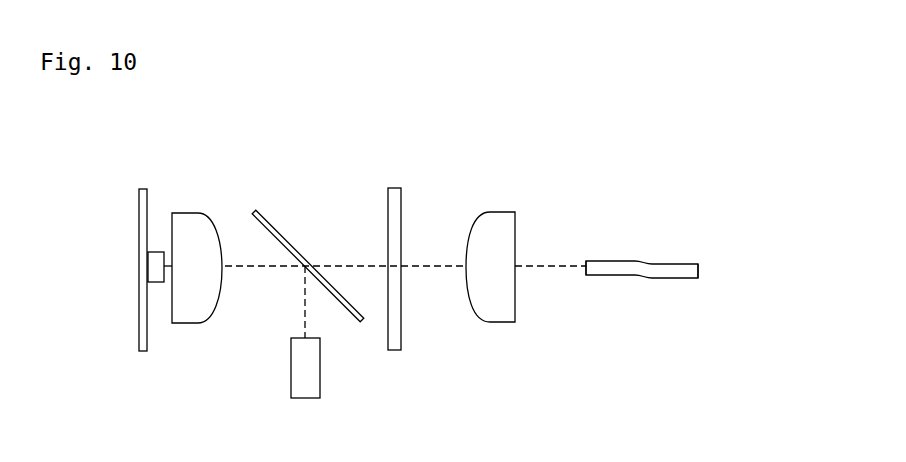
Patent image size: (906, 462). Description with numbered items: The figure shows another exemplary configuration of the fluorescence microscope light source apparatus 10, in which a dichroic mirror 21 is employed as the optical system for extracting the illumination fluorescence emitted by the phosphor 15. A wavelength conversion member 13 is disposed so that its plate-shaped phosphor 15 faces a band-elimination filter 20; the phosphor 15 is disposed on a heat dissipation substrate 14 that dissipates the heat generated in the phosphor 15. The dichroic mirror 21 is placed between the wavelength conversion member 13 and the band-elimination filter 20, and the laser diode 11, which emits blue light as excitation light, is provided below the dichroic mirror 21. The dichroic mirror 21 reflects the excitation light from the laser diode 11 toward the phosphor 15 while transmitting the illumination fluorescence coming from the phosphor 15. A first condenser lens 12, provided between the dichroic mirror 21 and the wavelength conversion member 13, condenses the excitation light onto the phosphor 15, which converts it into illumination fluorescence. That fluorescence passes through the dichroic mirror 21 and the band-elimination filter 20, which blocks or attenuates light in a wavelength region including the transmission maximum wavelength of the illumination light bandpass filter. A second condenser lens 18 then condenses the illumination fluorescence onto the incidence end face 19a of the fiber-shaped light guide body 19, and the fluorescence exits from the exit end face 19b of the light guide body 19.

The light source apparatus 10 is at (160, 155).
The laser diode 11 is at (291, 376).
The first condenser lens 12 is at (192, 213).
The wavelength conversion member 13 is at (127, 356).
The heat dissipation substrate 14 is at (139, 228).
The phosphor 15 is at (156, 283).
The second condenser lens 18 is at (501, 212).
The light guide body 19 is at (631, 261).
The incidence end face 19a is at (584, 273).
The exit end face 19b is at (698, 269).
The band-elimination filter 20 is at (394, 188).
The dichroic mirror 21 is at (279, 228).